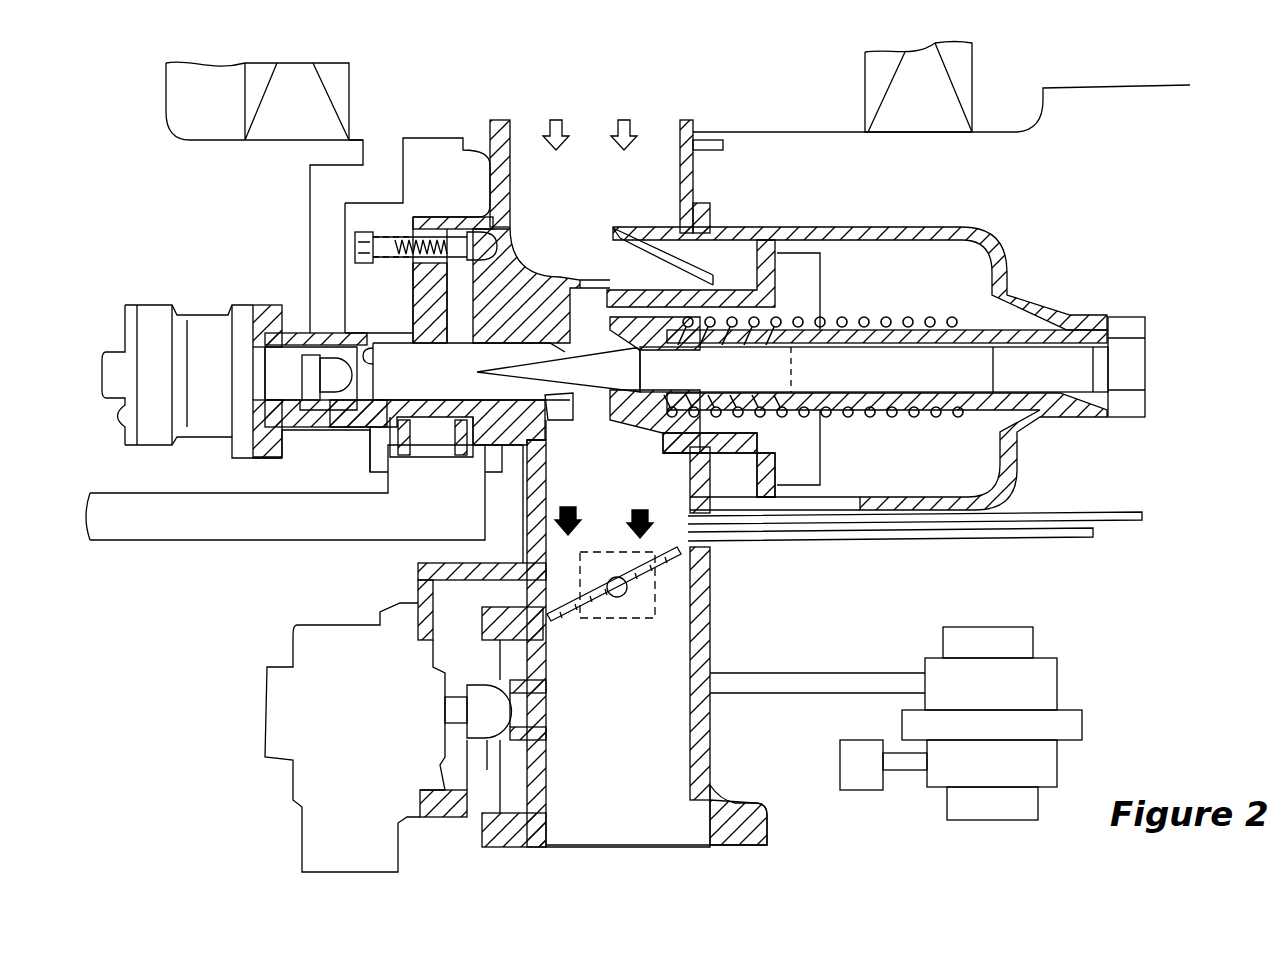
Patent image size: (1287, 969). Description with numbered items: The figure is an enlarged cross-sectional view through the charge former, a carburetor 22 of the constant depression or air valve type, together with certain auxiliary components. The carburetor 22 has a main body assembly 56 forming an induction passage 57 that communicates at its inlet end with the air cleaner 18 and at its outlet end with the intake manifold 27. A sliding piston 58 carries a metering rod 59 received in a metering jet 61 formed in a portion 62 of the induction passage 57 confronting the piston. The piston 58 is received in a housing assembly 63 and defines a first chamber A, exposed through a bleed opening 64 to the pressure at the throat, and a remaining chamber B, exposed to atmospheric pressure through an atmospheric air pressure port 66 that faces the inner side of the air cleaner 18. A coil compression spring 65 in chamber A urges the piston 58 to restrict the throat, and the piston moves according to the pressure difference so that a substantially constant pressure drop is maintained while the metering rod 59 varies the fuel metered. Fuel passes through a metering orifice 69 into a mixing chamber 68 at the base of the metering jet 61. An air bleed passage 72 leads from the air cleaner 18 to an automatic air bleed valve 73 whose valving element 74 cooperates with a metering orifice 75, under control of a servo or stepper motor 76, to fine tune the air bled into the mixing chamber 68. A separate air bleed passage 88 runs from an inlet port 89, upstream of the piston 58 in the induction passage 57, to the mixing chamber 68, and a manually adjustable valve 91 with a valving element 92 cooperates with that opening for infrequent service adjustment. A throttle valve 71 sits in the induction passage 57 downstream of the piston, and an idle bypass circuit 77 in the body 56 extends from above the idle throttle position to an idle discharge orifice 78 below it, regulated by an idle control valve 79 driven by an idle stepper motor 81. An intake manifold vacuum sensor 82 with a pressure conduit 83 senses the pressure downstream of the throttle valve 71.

The air cleaner 18 is at (828, 138).
The carburetor 22 is at (1140, 239).
The intake manifold 27 is at (227, 547).
The main body assembly 56 is at (710, 619).
The induction passage 57 is at (687, 768).
The sliding piston 58 is at (823, 283).
The metering rod 59 is at (590, 357).
The metering jet 61 is at (549, 395).
The induction passage portion 62 is at (573, 400).
The housing assembly 63 is at (1008, 264).
The bleed opening 64 is at (615, 318).
The coil compression spring 65 is at (890, 317).
The atmospheric air pressure port 66 is at (647, 227).
The mixing chamber 68 is at (413, 290).
The metering orifice 69 is at (413, 437).
The throttle valve 71 is at (640, 587).
The air bleed passage 72 is at (310, 183).
The automatic air bleed valve 73 is at (218, 307).
The valving element 74 is at (333, 383).
The metering orifice 75 is at (407, 375).
The servo or stepper motor 76 is at (125, 315).
The idle bypass circuit 77 is at (440, 600).
The idle discharge orifice 78 is at (533, 727).
The idle control valve 79 is at (487, 770).
The idle stepper motor 81 is at (263, 717).
The intake manifold vacuum sensor 82 is at (970, 627).
The pressure conduit 83 is at (762, 673).
The air bleed passage 88 is at (467, 290).
The inlet port 89 is at (517, 240).
The manually adjustable valve 91 is at (363, 227).
The valving element 92 is at (480, 237).
The first chamber A is at (915, 260).
The remaining chamber B is at (725, 250).